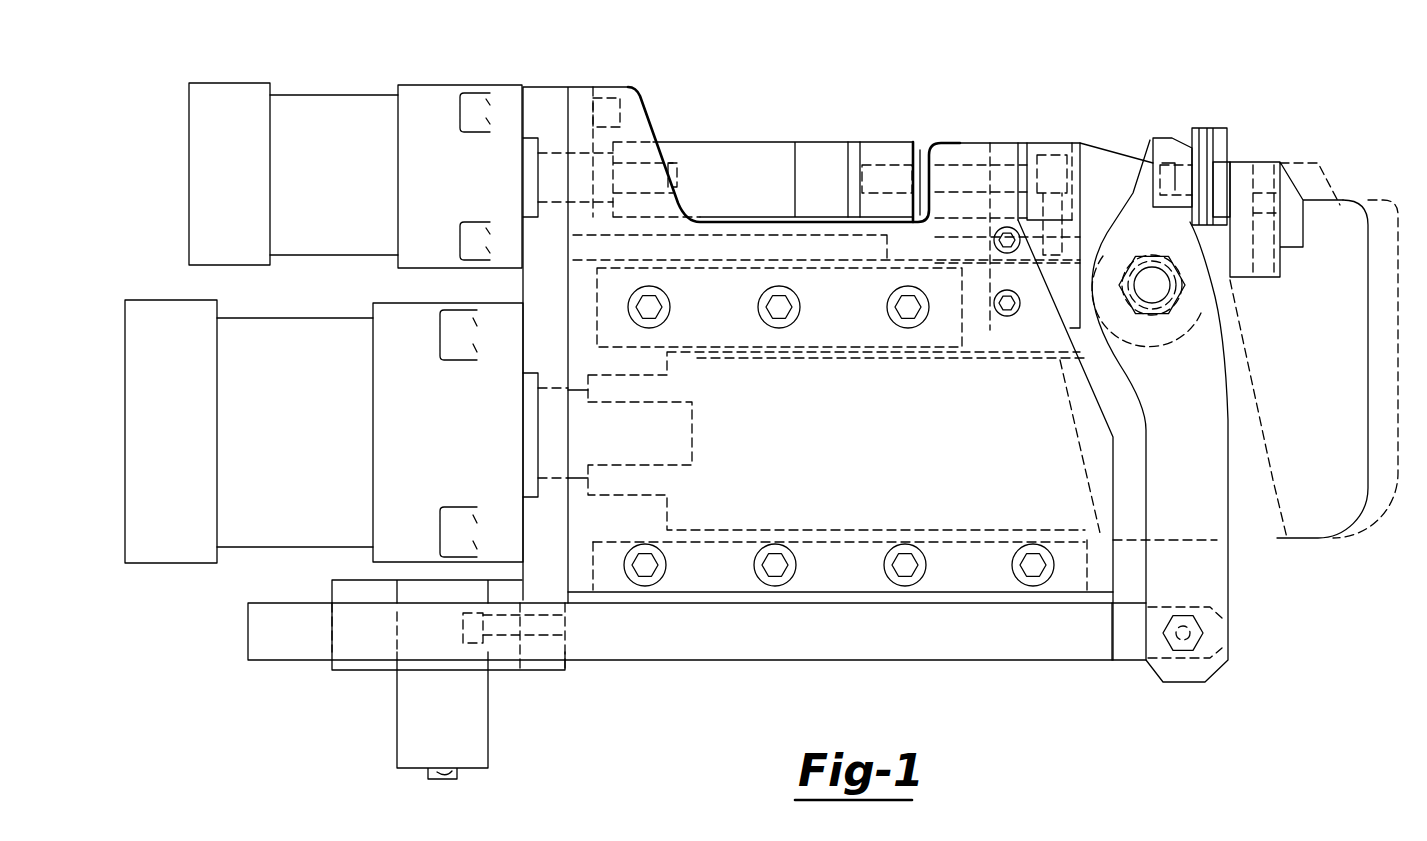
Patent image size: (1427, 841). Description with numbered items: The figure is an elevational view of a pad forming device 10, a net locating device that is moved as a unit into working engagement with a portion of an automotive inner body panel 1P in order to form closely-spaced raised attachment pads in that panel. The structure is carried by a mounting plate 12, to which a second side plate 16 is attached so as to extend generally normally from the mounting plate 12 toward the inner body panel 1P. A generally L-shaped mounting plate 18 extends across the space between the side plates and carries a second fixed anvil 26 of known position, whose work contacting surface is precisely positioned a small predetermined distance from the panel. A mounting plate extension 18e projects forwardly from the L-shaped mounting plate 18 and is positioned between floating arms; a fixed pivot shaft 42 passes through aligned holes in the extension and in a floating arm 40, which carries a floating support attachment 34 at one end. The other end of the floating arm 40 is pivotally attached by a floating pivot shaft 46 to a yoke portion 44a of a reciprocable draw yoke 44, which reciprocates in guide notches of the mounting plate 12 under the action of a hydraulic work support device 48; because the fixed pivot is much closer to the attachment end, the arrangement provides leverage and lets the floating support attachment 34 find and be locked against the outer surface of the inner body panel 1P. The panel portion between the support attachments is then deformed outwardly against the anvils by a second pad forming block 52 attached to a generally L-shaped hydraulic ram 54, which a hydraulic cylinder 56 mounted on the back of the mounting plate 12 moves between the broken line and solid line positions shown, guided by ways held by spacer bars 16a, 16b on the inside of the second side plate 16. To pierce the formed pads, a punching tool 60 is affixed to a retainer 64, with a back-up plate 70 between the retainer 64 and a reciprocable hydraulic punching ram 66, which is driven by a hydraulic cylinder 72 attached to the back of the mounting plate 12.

The pad forming device 10 is at (1077, 38).
The mounting plate 12 is at (540, 85).
The second side plate 16 is at (912, 445).
The spacer bar 16a is at (733, 347).
The spacer bar 16b is at (752, 548).
The L-shaped mounting plate 18 is at (1090, 143).
The mounting plate extension 18e is at (1095, 237).
The second fixed anvil 26 is at (1153, 137).
The floating support attachment 34 is at (1200, 128).
The inner body panel 1P is at (1228, 135).
The floating arm 40 is at (1192, 502).
The fixed pivot shaft 42 is at (1185, 283).
The reciprocable draw yoke 44 is at (845, 657).
The yoke portion 44a is at (1130, 662).
The floating pivot shaft 46 is at (1205, 637).
The hydraulic work support device 48 is at (460, 721).
The second pad forming block 52 is at (1255, 162).
The hydraulic ram 54 is at (1272, 540).
The hydraulic cylinder 56 is at (308, 449).
The punching tool 60 is at (922, 160).
The retainer 64 is at (877, 142).
The hydraulic punching ram 66 is at (766, 110).
The back-up plate 70 is at (851, 142).
The hydraulic cylinder 72 is at (352, 193).